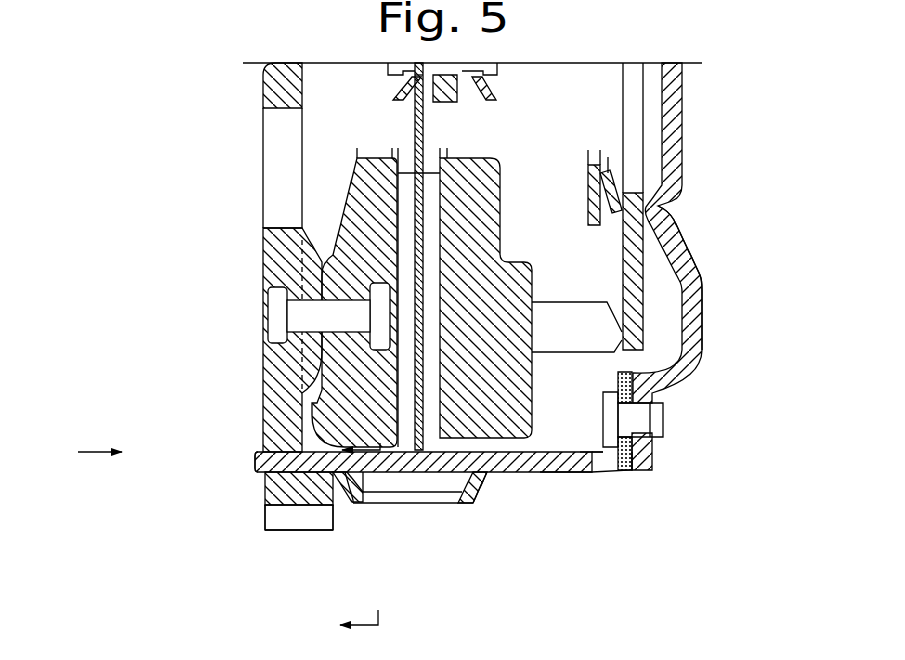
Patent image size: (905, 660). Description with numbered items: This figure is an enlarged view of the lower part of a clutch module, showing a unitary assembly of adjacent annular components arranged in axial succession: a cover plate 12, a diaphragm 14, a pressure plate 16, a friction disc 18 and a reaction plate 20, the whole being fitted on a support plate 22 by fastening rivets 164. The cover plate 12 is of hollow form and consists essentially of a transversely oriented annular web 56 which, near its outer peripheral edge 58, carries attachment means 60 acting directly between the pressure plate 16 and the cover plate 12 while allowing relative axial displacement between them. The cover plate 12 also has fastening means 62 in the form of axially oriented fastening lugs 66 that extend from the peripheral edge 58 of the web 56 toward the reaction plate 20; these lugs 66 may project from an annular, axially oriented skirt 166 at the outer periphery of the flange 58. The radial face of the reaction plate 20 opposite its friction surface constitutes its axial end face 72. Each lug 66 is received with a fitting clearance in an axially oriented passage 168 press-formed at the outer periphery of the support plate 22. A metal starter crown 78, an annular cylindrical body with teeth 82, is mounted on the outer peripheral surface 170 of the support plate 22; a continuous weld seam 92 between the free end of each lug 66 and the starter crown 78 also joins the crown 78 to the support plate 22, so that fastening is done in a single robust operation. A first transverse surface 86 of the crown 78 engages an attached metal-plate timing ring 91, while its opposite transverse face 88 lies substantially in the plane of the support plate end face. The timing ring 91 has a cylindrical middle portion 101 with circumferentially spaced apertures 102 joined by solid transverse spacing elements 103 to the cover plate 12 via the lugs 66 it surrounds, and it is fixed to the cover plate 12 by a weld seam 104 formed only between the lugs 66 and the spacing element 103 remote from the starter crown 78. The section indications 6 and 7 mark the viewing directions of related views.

The section line 6- 6 is at (349, 528).
The view direction 7 is at (87, 452).
The cover plate 12 is at (683, 237).
The diaphragm 14 is at (645, 265).
The pressure plate 16 is at (503, 185).
The friction disc 18 is at (413, 133).
The reaction plate 20 is at (352, 200).
The support plate 22 is at (265, 246).
The annular web 56 is at (703, 300).
The outer peripheral edge 58 is at (640, 460).
The attachment means 60 is at (648, 447).
The fastening means 62 is at (577, 470).
The fastening lug 66 is at (433, 465).
The axial end face 72 is at (265, 393).
The starter crown 78 is at (266, 505).
The teeth 82 is at (308, 532).
The first transverse surface 86 is at (334, 518).
The opposite transverse face 88 is at (265, 518).
The timing ring 91 is at (478, 500).
The weld seam 92 is at (257, 467).
The cylindrical middle portion 101 is at (407, 503).
The apertures 102 is at (458, 502).
The spacing elements 103 is at (347, 500).
The weld seam 104 is at (571, 482).
The fastening rivets 164 is at (292, 318).
The skirt 166 is at (594, 455).
The axially orientated passages 168 is at (273, 456).
The outer peripheral surface 170 is at (266, 492).